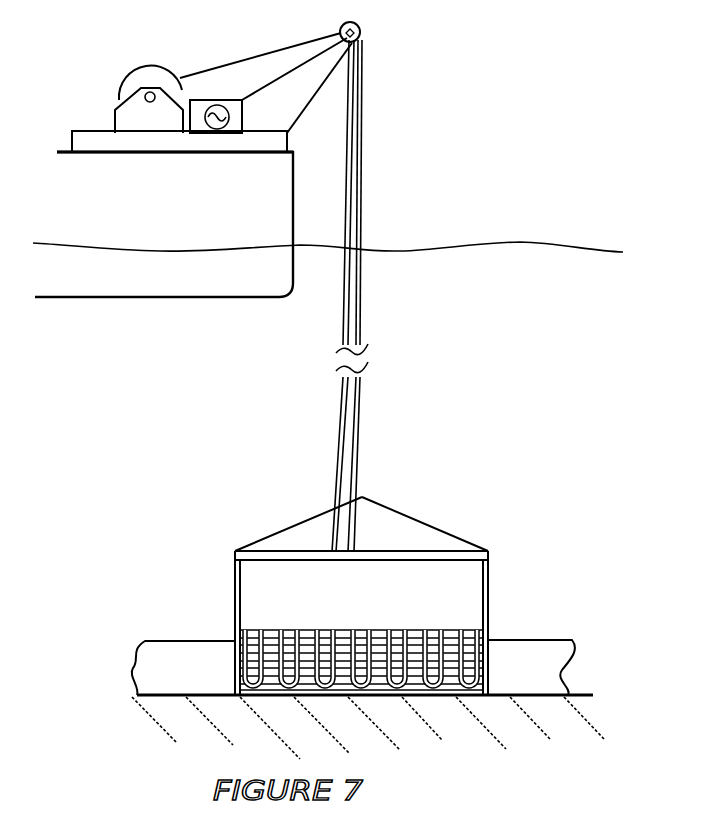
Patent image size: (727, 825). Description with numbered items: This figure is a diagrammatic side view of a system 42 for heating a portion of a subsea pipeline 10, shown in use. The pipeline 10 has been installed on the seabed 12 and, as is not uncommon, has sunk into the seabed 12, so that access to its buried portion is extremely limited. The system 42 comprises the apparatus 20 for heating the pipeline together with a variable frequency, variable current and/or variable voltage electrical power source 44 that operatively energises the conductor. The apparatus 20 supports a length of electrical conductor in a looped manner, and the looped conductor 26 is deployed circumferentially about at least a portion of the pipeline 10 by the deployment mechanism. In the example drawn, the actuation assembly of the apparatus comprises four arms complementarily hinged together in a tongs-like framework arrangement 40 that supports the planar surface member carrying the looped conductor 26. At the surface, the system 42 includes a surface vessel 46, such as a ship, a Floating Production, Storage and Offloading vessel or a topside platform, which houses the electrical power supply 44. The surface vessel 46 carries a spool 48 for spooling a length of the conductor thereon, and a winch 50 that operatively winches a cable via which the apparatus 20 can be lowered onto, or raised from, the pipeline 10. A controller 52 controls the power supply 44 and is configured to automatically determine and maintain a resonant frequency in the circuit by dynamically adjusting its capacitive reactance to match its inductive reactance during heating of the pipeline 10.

The subsea pipeline 10 is at (183, 662).
The seabed 12 is at (587, 695).
The apparatus 20 is at (352, 595).
The looped conductor 26 is at (293, 625).
The tongs-like framework arrangement 40 is at (226, 552).
The system 42 is at (467, 132).
The electrical power source 44 is at (198, 153).
The surface vessel 46 is at (60, 150).
The spool 48 is at (140, 70).
The winch 50 is at (148, 103).
The controller 52 is at (230, 128).